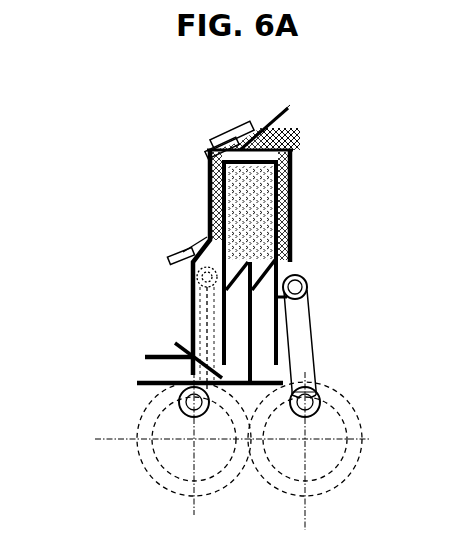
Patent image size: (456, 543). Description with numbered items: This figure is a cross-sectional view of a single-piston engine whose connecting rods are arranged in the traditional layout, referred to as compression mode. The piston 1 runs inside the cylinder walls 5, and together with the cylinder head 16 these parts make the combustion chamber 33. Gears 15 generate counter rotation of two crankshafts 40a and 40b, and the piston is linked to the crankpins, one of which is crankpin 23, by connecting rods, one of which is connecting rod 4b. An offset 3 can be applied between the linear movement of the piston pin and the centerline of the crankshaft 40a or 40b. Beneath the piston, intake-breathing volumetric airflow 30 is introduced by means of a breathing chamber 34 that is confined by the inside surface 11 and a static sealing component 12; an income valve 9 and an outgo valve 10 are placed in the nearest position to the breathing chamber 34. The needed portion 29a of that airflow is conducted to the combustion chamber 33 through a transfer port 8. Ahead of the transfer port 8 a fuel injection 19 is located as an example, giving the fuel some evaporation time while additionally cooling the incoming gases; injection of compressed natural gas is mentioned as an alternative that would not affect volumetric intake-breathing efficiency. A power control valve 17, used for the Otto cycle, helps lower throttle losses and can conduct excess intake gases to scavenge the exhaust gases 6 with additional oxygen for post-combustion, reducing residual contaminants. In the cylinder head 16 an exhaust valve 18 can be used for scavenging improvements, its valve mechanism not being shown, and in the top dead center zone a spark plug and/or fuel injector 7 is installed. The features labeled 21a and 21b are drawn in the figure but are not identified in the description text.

The piston 1 is at (292, 165).
The offset 3 is at (216, 307).
The connecting rod 4b is at (313, 345).
The cylinder walls 5 is at (292, 207).
The exhaust gases 6 is at (300, 140).
The spark plug and/or fuel injector 7 is at (207, 148).
The transfer port 8 is at (187, 247).
The income valve 9 is at (314, 317).
The outgo valve 10 is at (190, 288).
The inside surface 11 is at (207, 205).
The static sealing component 12 is at (313, 363).
The gears 15 is at (160, 493).
The cylinder head 16 is at (259, 121).
The power control valve 17 is at (173, 343).
The exhaust valve 18 is at (300, 128).
The fuel injection 19 is at (167, 263).
The left pivot 21a is at (195, 286).
The right pivot 21b is at (308, 283).
The crankpin 23 is at (143, 453).
The portion of intake-breathing volumetric airflow 29a is at (137, 384).
The intake-breathing volumetric airflow 30 is at (333, 410).
The combustion chamber 33 is at (202, 148).
The breathing chamber 34 is at (247, 228).
The crankshaft 40a is at (160, 463).
The crankshaft 40b is at (330, 475).